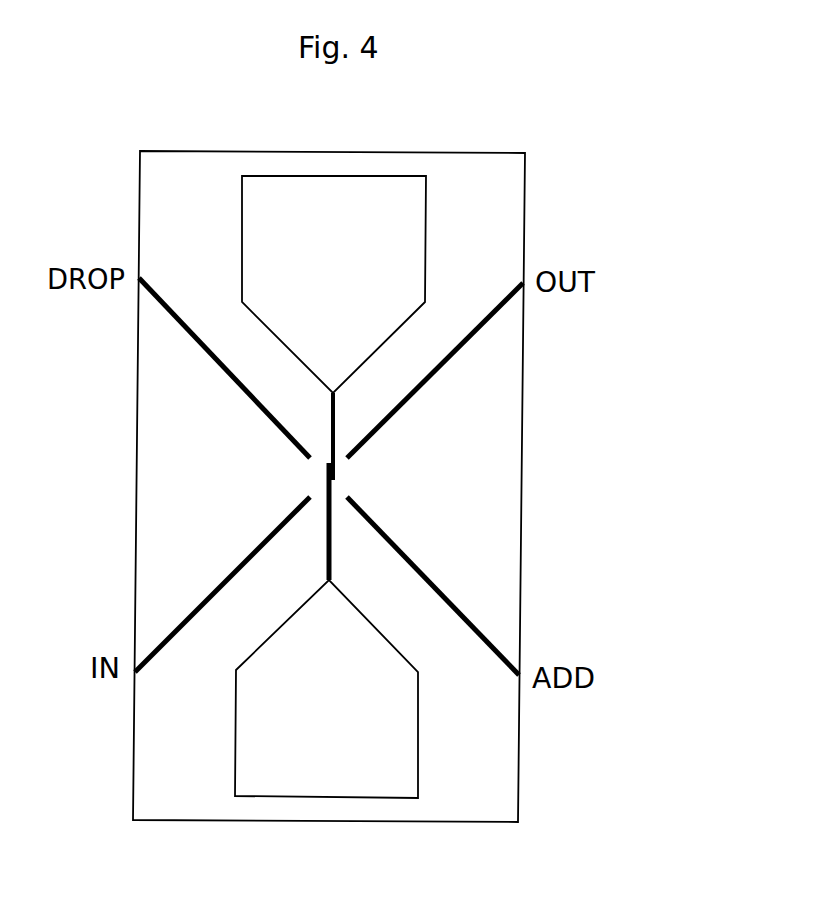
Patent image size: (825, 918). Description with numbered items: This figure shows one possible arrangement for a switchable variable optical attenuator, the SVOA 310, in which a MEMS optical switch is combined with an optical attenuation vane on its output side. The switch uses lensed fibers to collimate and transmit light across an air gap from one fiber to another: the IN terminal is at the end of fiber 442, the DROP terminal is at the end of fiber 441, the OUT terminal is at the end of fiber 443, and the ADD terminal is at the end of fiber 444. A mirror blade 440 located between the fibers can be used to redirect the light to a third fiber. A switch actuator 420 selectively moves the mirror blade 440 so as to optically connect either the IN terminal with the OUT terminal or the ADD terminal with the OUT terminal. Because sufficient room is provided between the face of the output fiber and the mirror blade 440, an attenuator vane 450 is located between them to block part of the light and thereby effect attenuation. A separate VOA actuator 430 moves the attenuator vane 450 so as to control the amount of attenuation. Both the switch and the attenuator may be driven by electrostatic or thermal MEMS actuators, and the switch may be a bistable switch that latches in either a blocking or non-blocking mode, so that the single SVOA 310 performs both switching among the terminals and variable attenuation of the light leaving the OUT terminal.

The SVOA 310 is at (578, 467).
The switch actuator 420 is at (381, 788).
The VOA actuator 430 is at (404, 185).
The mirror blade 440 is at (333, 527).
The fiber 441 is at (167, 317).
The fiber 442 is at (172, 628).
The fiber 443 is at (460, 353).
The fiber 444 is at (467, 612).
The attenuator vane 450 is at (329, 420).